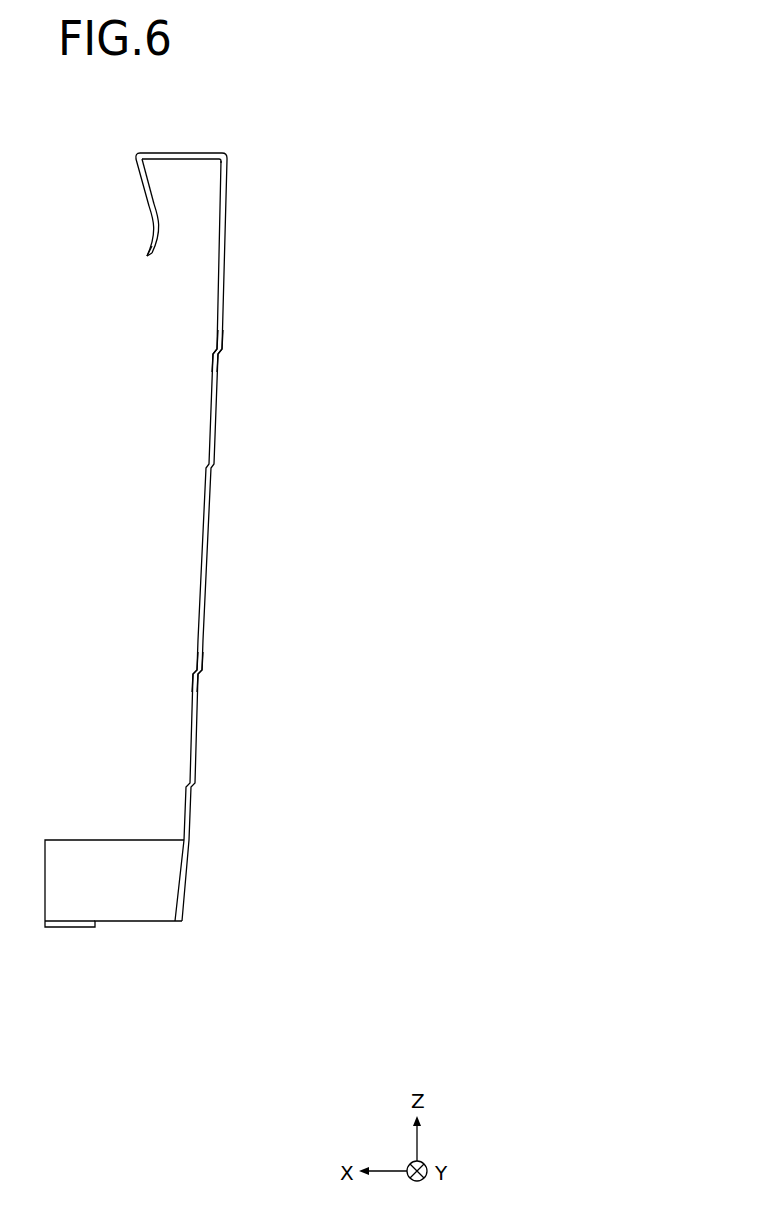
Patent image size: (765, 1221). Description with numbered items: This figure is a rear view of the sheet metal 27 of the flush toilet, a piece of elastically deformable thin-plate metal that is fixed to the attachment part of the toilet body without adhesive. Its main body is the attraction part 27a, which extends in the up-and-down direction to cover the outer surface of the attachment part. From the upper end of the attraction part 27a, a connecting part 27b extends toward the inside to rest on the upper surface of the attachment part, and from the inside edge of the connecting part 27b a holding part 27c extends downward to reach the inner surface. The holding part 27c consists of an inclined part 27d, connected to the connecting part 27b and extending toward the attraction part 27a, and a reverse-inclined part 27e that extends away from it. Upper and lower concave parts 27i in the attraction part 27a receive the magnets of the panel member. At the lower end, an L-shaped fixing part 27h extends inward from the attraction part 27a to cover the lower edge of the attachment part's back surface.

The sheet metal 27 is at (309, 287).
The attraction part 27a is at (210, 527).
The connecting part 27b is at (182, 153).
The holding part 27c is at (145, 217).
The inclined part 27d is at (141, 182).
The reverse-inclined part 27e is at (162, 242).
The fixing part 27h is at (123, 910).
The concave parts 27i is at (217, 410).